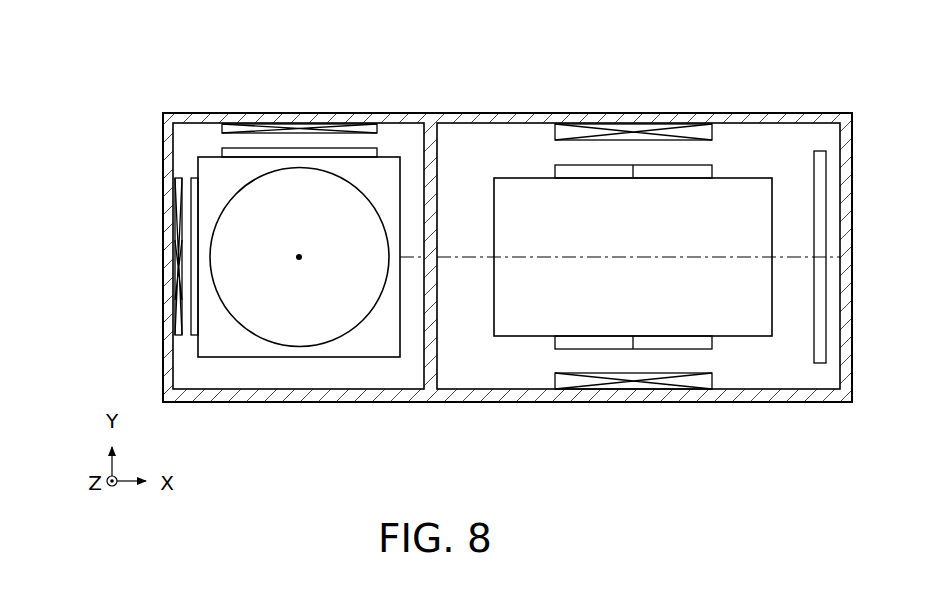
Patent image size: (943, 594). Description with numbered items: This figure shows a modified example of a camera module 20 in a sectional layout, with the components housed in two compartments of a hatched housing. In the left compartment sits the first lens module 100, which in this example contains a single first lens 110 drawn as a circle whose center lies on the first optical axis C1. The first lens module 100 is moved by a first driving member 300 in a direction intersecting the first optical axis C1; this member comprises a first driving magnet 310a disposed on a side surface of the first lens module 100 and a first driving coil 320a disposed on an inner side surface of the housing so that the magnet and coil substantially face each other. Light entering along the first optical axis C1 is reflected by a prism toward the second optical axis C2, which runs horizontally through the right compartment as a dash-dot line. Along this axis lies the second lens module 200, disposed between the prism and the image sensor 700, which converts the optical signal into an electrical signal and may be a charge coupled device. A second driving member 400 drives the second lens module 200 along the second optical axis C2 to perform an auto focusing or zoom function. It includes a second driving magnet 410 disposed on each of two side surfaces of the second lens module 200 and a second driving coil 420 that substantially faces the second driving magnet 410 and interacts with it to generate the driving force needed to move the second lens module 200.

The camera module 20 is at (630, 95).
The first lens module 100 is at (373, 357).
The first lens 110 is at (299, 347).
The first optical axis C1 is at (299, 243).
The second lens module 200 is at (750, 178).
The second optical axis C2 is at (728, 257).
The first driving member 300 is at (107, 256).
The first driving magnet 310a is at (194, 295).
The first driving coil 320a is at (176, 262).
The second driving member 400 is at (601, 307).
The second driving magnet 410 is at (563, 341).
The second driving coil 420 is at (633, 285).
The image sensor 700 is at (820, 363).